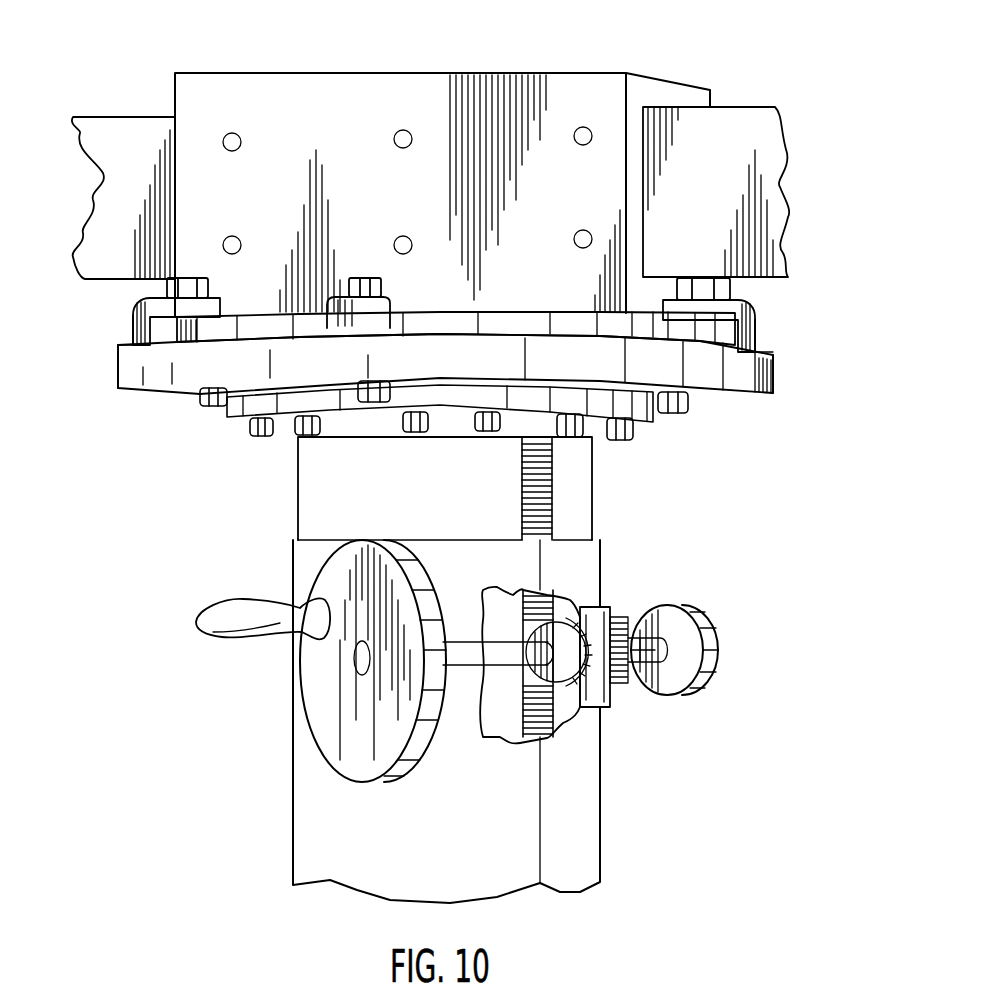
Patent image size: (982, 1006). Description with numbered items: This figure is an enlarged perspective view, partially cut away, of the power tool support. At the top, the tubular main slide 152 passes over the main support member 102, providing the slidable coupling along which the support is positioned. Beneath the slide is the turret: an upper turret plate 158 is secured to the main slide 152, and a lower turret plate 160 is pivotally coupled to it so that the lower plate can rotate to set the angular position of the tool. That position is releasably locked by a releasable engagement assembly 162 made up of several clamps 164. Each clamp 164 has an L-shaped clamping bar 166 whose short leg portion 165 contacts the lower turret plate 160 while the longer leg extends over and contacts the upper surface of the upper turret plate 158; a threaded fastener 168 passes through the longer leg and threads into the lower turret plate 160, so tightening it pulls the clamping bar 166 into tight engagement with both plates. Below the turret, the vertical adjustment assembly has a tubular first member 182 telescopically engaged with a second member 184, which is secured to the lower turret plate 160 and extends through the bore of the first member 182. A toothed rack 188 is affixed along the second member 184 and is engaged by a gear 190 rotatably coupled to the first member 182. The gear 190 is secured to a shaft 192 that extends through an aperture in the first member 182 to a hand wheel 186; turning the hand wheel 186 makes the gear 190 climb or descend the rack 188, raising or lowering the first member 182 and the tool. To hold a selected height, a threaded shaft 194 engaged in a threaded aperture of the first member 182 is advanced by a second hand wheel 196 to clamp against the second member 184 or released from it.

The main support member 102 is at (755, 107).
The main slide 152 is at (533, 72).
The upper turret plate 158 is at (537, 325).
The lower turret plate 160 is at (753, 397).
The releasable engagement assembly 162 is at (795, 320).
The clamp 164 is at (114, 325).
The short leg portion 165 is at (118, 345).
The clamping bar 166 is at (134, 299).
The threaded fastener 168 is at (343, 285).
The first member 182 is at (600, 860).
The second member 184 is at (585, 507).
The hand wheel 186 is at (323, 583).
The toothed rack 188 is at (547, 523).
The gear 190 is at (580, 601).
The shaft 192 is at (600, 723).
The threaded shaft 194 is at (640, 693).
The hand wheel 196 is at (720, 648).